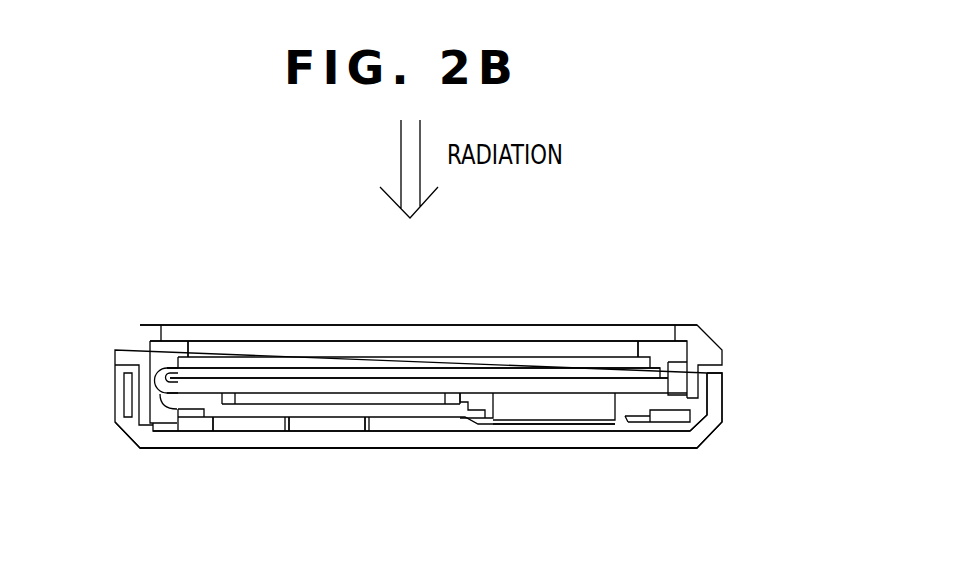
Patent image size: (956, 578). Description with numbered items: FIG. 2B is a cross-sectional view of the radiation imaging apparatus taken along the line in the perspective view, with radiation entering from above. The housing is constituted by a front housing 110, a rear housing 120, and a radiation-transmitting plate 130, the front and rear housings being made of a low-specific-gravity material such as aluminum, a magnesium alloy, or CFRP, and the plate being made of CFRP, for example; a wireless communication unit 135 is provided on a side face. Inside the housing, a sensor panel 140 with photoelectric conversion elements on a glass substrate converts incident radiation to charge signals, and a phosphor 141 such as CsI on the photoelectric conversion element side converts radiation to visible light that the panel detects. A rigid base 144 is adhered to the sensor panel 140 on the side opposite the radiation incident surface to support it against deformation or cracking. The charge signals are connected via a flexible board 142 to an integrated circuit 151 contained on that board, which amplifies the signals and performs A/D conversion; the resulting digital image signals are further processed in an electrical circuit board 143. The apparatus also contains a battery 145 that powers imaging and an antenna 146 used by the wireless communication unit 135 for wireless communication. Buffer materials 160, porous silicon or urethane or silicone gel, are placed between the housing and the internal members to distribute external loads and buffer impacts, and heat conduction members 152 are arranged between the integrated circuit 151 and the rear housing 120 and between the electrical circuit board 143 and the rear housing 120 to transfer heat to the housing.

The front housing 110 is at (704, 350).
The rear housing 120 is at (508, 440).
The radiation-transmitting plate 130 is at (482, 337).
The wireless communication unit 135 is at (703, 430).
The sensor panel 140 is at (207, 373).
The phosphor 141 is at (247, 362).
The flexible board 142 is at (157, 426).
The electrical circuit board 143 is at (265, 410).
The base 144 is at (150, 368).
The battery 145 is at (565, 410).
The antenna 146 is at (667, 422).
The integrated circuit 151 is at (157, 397).
The heat conduction member 152 is at (200, 423).
The buffer material 160 is at (322, 352).